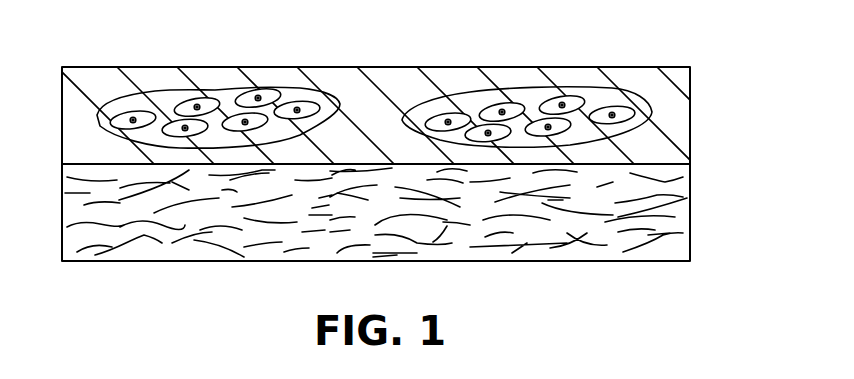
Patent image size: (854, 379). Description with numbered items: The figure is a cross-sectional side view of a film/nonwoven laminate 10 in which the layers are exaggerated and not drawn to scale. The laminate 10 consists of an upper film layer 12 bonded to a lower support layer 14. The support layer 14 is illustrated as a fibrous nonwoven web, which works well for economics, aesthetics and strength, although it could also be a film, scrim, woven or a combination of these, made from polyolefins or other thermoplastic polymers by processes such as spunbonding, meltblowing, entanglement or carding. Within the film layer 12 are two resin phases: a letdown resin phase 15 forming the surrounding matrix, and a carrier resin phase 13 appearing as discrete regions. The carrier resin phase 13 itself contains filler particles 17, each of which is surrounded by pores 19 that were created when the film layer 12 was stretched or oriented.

The film/nonwoven laminate 10 is at (712, 106).
The film layer 12 is at (408, 94).
The carrier resin phase 13 is at (545, 92).
The support layer 14 is at (680, 225).
The letdown resin phase 15 is at (393, 97).
The filler particles 17 is at (183, 93).
The pores 19 is at (197, 103).